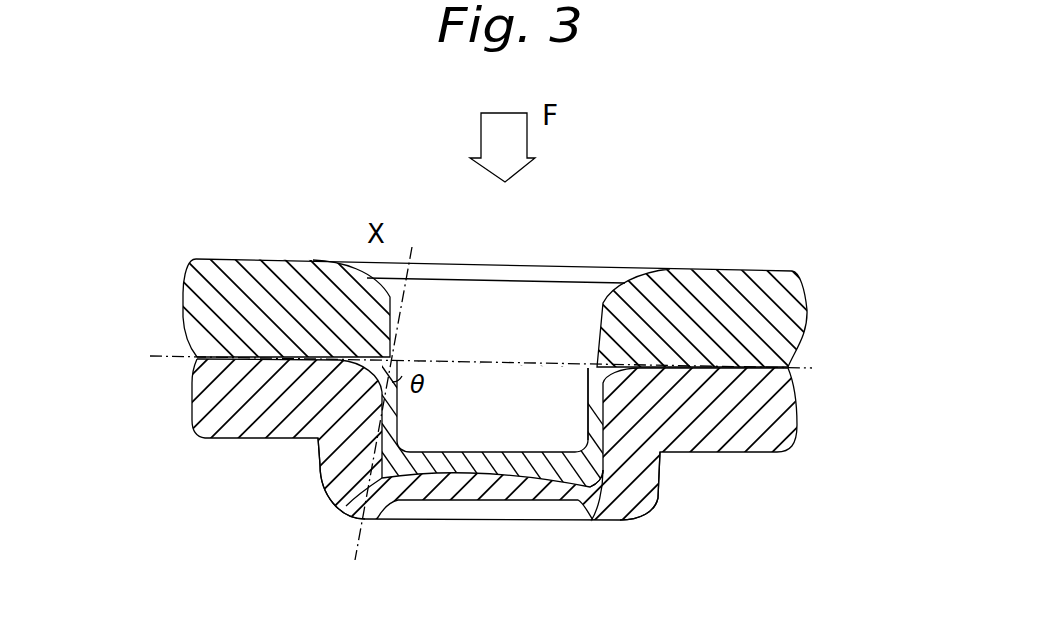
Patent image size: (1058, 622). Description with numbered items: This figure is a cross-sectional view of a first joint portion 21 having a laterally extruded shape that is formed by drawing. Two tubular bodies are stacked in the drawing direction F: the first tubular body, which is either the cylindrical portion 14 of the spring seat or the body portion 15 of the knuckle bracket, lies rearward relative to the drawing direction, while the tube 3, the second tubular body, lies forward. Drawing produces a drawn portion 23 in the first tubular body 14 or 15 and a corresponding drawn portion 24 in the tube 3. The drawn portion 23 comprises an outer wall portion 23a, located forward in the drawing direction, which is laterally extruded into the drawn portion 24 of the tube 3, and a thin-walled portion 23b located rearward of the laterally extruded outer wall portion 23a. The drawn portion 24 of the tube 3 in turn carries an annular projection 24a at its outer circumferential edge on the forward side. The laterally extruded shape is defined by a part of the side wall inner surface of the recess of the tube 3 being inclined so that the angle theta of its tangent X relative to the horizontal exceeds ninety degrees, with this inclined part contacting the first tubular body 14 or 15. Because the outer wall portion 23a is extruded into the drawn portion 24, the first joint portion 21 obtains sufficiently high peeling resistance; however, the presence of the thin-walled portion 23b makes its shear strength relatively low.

The tube 3 is at (200, 402).
The cylindrical portion 14 is at (489, 311).
The body portion 15 is at (198, 324).
The first joint portion 21 is at (446, 306).
The drawn portion 23 is at (490, 457).
The outer wall portion 23a is at (596, 468).
The thin-walled portion 23b is at (590, 433).
The drawn portion 24 is at (658, 478).
The annular projection 24a is at (345, 500).